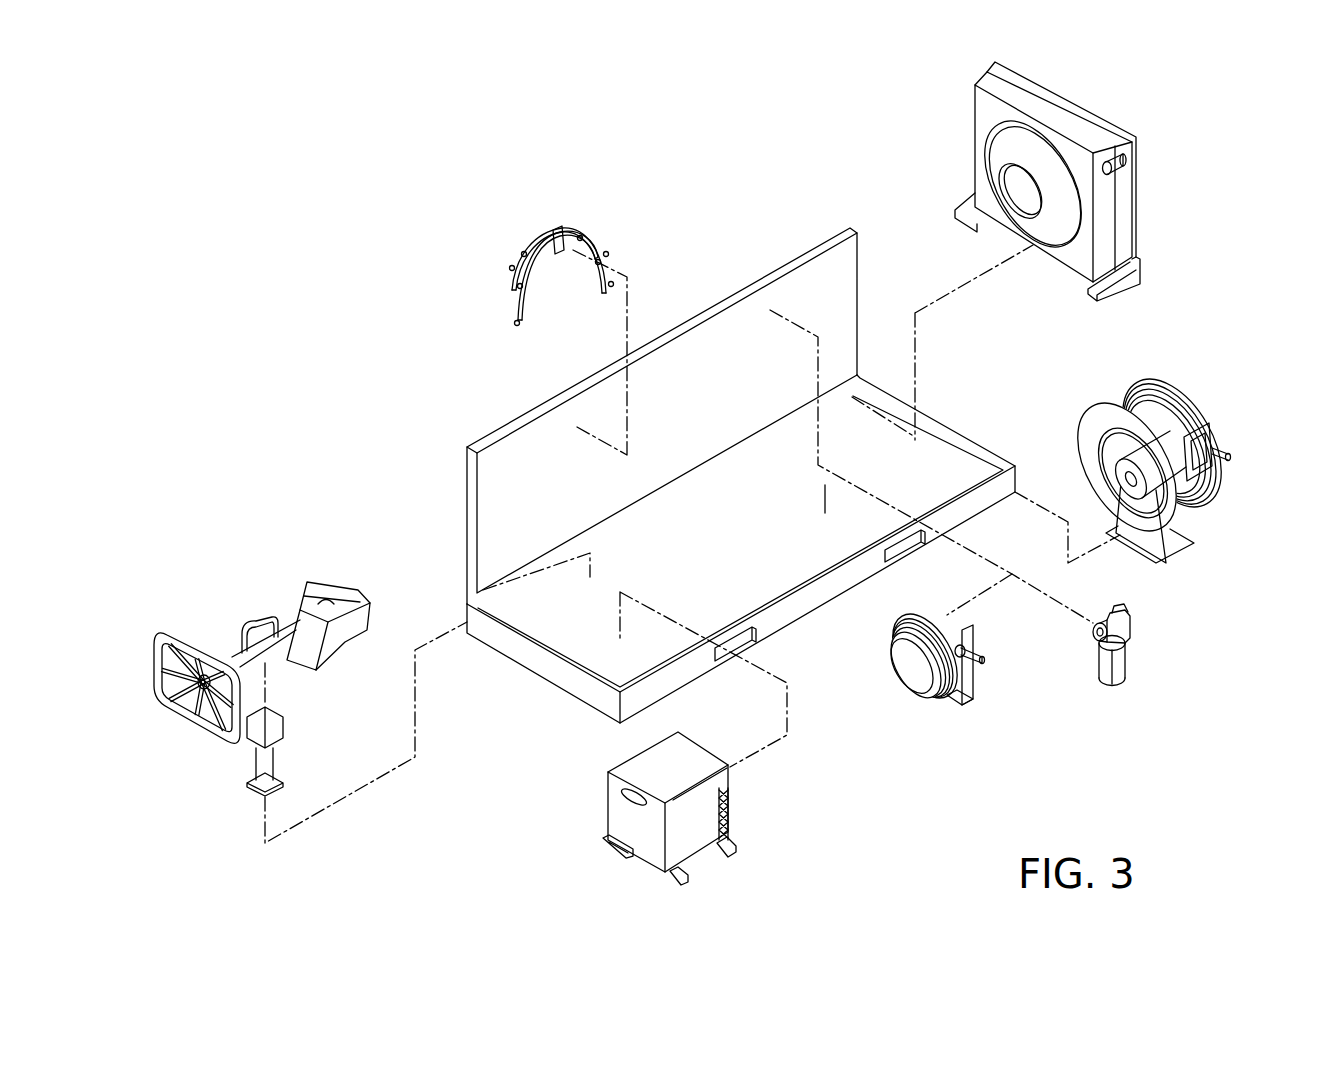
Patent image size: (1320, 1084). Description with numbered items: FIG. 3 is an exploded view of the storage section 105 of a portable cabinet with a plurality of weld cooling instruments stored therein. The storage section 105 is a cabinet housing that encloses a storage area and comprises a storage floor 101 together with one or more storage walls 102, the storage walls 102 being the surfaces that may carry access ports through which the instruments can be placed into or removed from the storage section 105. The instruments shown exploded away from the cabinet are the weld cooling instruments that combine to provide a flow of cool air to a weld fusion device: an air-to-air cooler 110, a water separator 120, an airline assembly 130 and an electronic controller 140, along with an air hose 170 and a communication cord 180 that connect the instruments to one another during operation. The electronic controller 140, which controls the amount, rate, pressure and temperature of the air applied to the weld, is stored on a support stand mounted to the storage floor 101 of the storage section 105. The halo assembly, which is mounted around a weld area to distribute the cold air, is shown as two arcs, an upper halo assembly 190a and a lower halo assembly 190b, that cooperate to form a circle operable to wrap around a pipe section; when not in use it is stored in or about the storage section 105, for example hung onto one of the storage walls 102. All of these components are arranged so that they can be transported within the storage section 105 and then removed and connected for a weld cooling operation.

The storage floor 101 is at (749, 539).
The storage wall 102 is at (690, 411).
The storage section 105 is at (374, 341).
The air-to-air cooler 110 is at (1168, 183).
The water separator 120 is at (1149, 660).
The airline assembly 130 is at (717, 871).
The electronic controller 140 is at (232, 775).
The air hose 170 is at (1195, 386).
The communication cord 180 is at (996, 695).
The upper halo assembly 190a is at (537, 238).
The lower halo assembly 190b is at (519, 312).